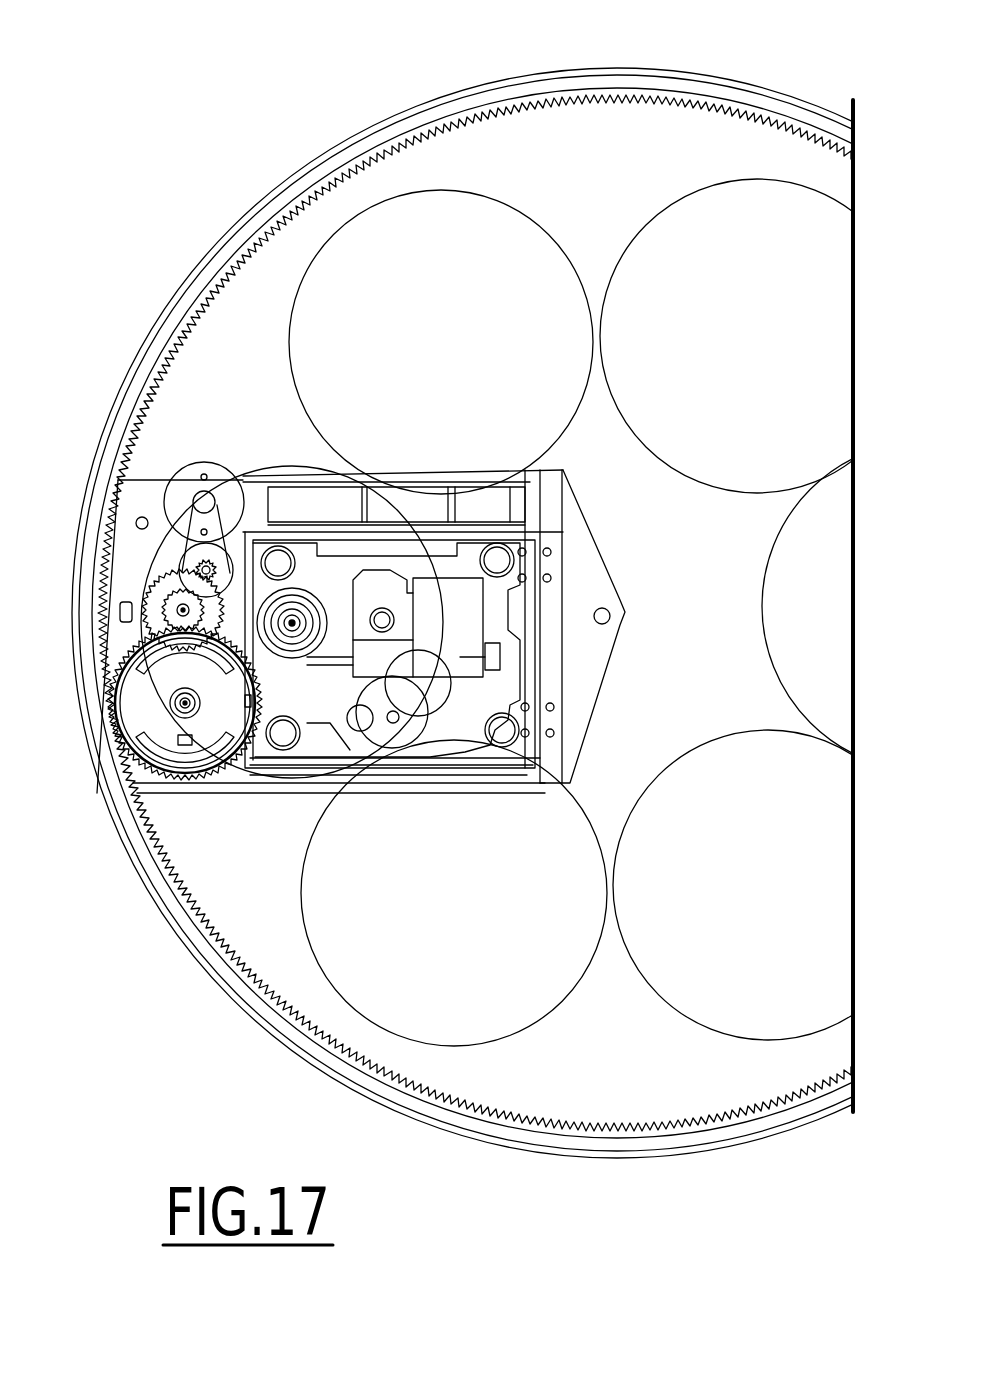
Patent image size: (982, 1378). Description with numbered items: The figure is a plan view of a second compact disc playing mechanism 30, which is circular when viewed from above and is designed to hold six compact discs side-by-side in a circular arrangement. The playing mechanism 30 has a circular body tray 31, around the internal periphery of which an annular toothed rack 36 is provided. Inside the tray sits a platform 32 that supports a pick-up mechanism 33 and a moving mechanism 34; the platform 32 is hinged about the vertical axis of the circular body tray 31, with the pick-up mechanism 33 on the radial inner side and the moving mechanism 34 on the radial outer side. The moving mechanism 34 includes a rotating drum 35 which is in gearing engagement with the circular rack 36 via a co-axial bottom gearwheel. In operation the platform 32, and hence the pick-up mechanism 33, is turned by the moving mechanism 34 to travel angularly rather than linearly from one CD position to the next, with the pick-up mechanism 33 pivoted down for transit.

The CD playing mechanism 30 is at (178, 198).
The circular body tray 31 is at (418, 106).
The platform 32 is at (607, 572).
The pick-up mechanism 33 is at (440, 762).
The moving mechanism 34 is at (140, 563).
The rotating drum 35 is at (135, 707).
The annular toothed rack 36 is at (535, 110).